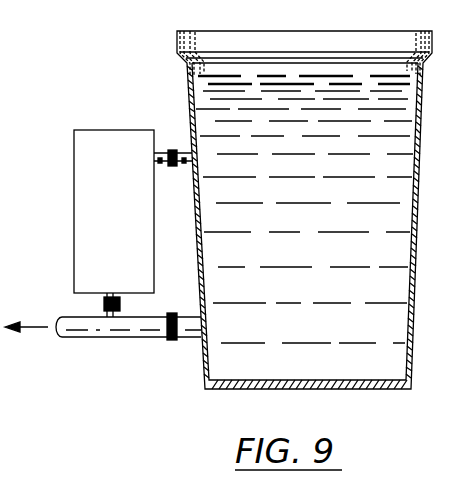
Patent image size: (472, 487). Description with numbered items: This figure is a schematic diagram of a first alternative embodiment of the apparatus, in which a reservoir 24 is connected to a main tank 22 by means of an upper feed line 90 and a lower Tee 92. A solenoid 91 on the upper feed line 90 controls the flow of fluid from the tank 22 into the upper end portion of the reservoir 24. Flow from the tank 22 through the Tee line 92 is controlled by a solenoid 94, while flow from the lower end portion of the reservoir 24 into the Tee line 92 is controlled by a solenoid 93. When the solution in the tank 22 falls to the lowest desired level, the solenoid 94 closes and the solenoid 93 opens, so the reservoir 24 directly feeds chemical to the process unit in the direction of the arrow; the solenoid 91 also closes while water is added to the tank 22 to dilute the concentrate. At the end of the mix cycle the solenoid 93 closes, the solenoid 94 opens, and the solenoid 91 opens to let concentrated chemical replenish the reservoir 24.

The tank 22 is at (316, 198).
The reservoir 24 is at (118, 211).
The upper feed line 90 is at (182, 163).
The solenoid 91 is at (170, 150).
The lower Tee 92 is at (122, 337).
The solenoid 93 is at (104, 304).
The solenoid 94 is at (172, 340).